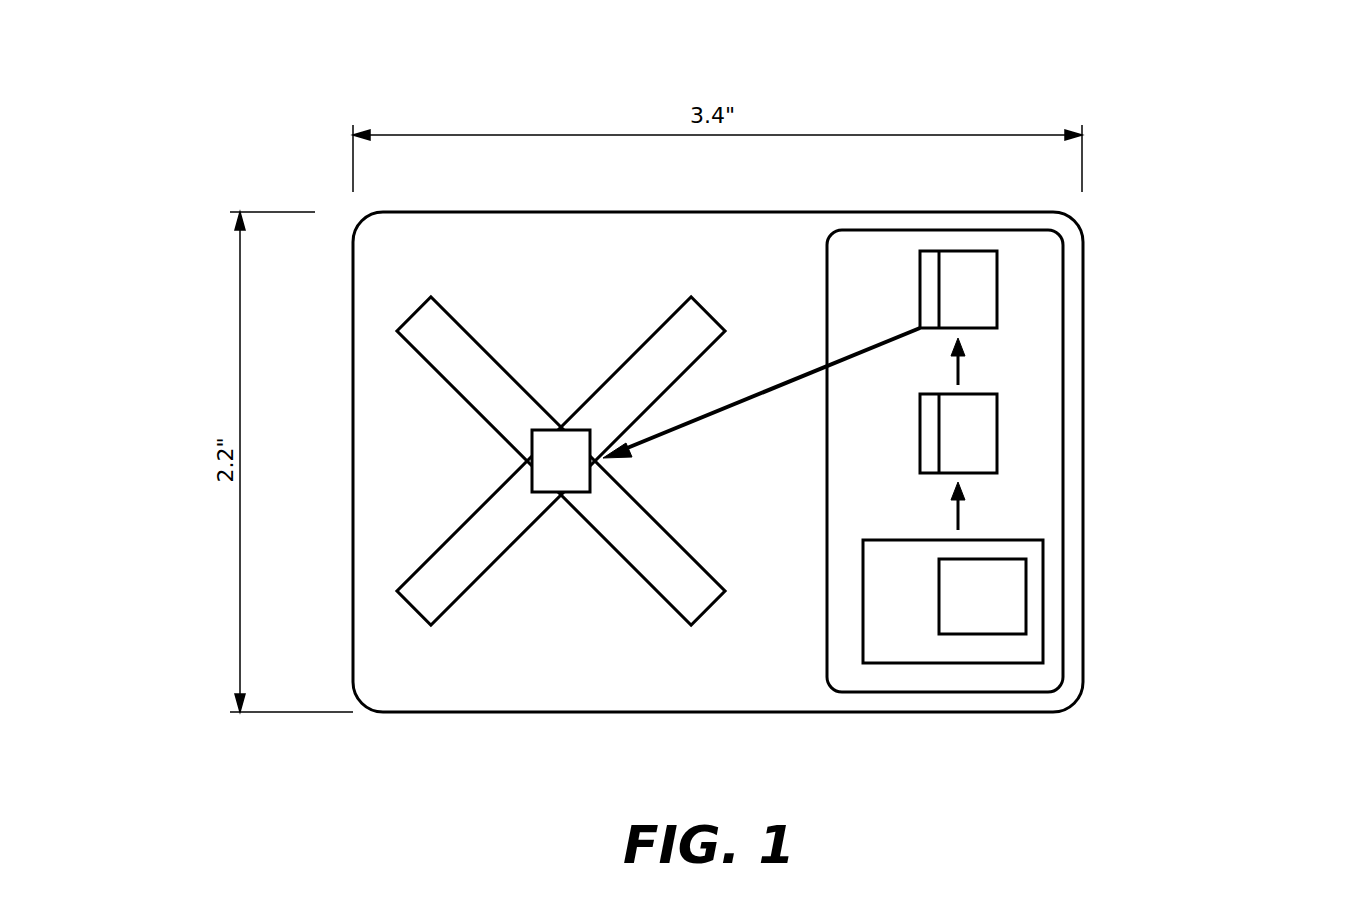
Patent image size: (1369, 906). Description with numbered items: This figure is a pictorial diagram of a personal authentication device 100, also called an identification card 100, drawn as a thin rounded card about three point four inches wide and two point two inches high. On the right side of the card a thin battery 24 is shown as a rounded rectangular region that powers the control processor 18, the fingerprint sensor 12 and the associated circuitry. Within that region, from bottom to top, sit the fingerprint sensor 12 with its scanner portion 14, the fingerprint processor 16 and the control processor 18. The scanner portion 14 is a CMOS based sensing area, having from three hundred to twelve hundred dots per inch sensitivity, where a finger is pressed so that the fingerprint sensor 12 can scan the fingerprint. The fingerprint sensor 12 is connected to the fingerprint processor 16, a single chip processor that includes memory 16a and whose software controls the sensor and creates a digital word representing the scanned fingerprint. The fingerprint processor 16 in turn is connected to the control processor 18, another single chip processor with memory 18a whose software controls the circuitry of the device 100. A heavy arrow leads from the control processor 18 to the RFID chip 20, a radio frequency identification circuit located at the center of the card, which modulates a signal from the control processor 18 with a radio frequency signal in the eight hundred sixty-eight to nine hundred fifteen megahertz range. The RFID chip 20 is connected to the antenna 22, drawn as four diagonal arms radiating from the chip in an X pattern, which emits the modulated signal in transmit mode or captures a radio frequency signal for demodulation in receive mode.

The personal authentication device 100 is at (962, 87).
The antenna 22 is at (413, 313).
The radio frequency identification circuit 20 is at (560, 470).
The battery 24 is at (1068, 222).
The control processor 18 is at (1036, 289).
The memory 18a is at (928, 288).
The fingerprint processor 16 is at (1033, 433).
The memory 16a is at (928, 436).
The fingerprint sensor 12 is at (1080, 651).
The scanner portion 14 is at (977, 615).